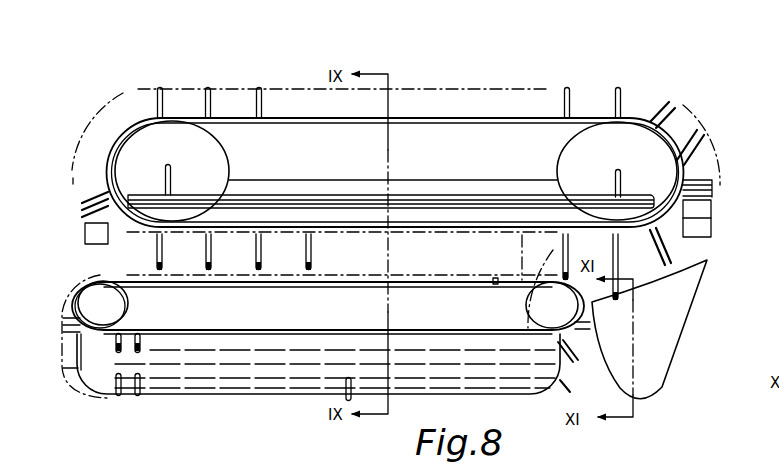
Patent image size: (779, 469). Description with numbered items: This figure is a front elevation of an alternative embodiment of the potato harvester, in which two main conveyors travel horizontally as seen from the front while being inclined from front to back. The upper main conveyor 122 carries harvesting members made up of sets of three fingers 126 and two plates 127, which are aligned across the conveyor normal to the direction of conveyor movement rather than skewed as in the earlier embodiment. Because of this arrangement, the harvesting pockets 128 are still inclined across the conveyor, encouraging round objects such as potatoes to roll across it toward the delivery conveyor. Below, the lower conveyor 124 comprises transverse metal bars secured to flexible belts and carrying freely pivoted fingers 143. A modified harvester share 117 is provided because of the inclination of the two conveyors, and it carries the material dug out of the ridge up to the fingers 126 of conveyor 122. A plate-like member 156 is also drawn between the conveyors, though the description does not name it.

The harvester share 117 is at (655, 368).
The main conveyor 122 is at (482, 122).
The lower conveyor 124 is at (460, 321).
The fingers 126 is at (258, 104).
The plates 127 is at (88, 238).
The harvesting pockets 128 is at (232, 250).
The freely pivoted fingers 143 is at (150, 385).
The plate 156 is at (267, 200).